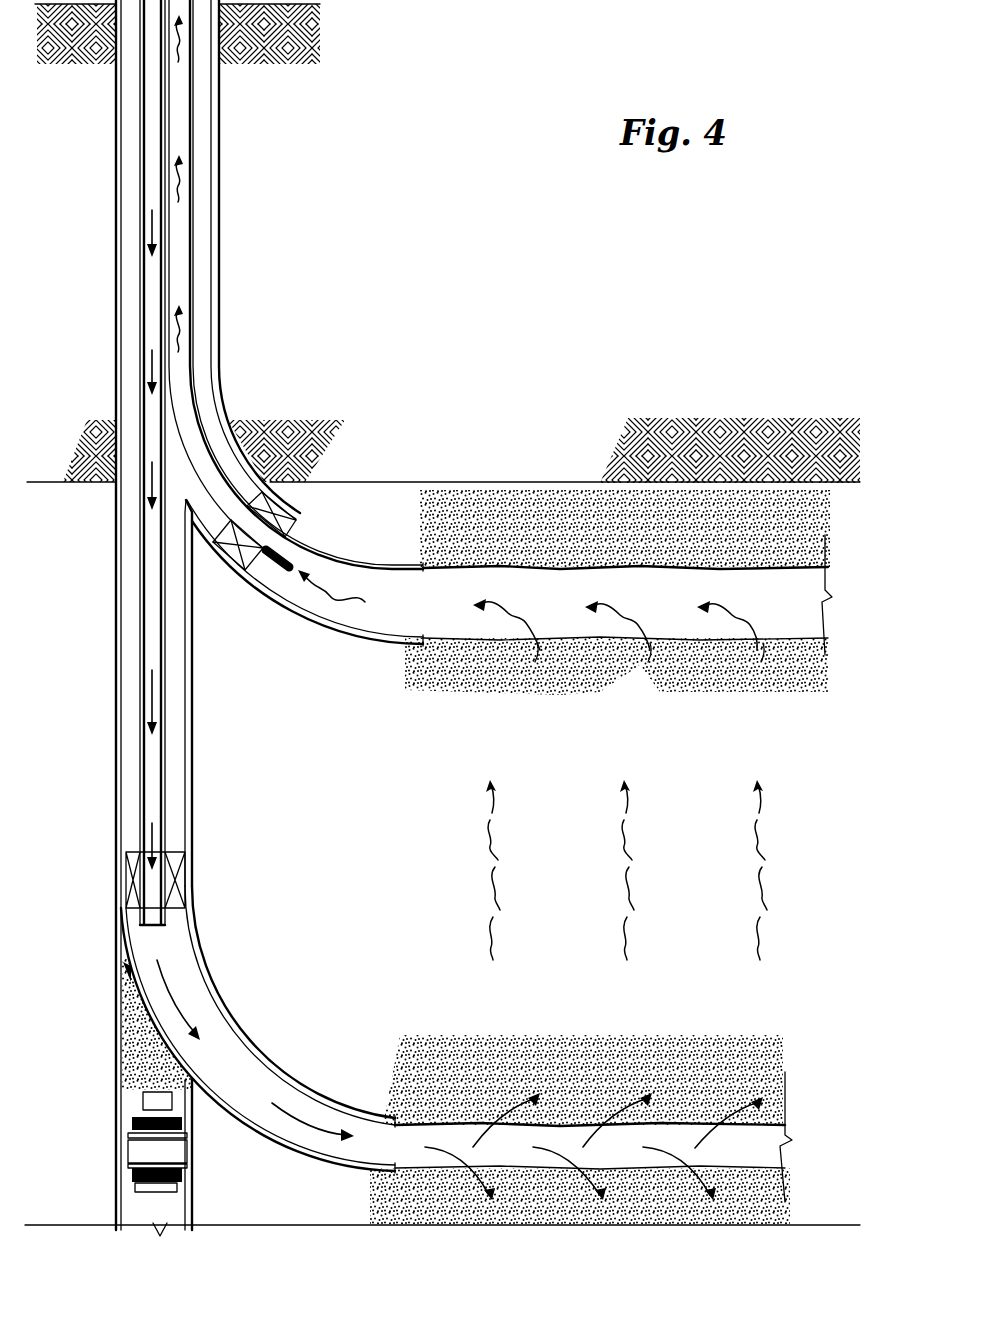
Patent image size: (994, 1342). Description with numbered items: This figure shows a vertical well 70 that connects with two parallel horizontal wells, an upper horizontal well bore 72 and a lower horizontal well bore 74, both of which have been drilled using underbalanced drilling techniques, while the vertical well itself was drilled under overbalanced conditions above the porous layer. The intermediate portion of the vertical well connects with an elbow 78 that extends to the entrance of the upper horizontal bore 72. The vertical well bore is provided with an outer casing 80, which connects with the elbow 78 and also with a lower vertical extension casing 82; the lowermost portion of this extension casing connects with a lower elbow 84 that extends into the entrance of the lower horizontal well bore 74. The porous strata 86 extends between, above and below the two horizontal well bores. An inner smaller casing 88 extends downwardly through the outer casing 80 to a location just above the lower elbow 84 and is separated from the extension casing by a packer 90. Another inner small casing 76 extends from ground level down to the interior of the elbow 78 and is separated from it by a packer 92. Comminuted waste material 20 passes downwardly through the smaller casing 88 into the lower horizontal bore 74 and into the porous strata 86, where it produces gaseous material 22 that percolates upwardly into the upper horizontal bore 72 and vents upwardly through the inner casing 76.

The waste material 20 is at (150, 374).
The gaseous material 22 is at (172, 165).
The vertical well 70 is at (220, 154).
The upper horizontal well bore 72 is at (526, 590).
The lower horizontal well bore 74 is at (790, 1140).
The inner small casing 76 is at (181, 228).
The elbow 78 is at (353, 634).
The outer casing 80 is at (213, 283).
The extension casing 82 is at (116, 700).
The lower elbow 84 is at (263, 1070).
The porous strata 86 is at (787, 653).
The inner smaller casing 88 is at (148, 199).
The packer 90 is at (135, 858).
The packer 92 is at (252, 567).